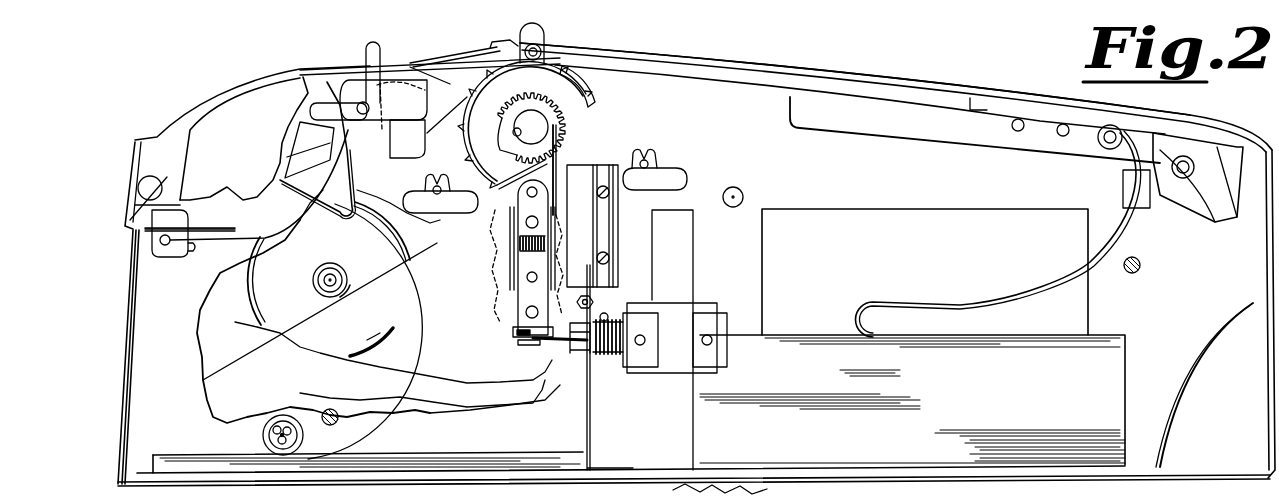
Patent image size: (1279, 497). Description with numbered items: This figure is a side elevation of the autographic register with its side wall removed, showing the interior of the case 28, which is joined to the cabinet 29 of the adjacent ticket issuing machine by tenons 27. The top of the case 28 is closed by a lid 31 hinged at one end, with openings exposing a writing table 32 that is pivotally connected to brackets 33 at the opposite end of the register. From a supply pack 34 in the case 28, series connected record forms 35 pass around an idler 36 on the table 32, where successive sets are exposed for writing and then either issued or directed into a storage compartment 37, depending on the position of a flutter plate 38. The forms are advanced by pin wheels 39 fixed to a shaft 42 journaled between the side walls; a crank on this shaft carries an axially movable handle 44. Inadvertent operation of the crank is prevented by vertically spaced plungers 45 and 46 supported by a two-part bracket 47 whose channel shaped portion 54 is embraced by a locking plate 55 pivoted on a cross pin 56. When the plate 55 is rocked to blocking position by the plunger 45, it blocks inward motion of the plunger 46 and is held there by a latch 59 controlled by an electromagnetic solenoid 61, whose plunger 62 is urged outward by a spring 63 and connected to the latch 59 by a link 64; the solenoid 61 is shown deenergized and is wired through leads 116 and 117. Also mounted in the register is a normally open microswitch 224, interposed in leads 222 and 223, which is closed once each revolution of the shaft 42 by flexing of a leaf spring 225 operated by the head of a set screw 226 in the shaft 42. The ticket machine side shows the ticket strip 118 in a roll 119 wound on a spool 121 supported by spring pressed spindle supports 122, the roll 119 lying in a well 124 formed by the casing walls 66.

The tenons 27 is at (742, 195).
The case 28 is at (125, 210).
The cabinet 29 is at (223, 343).
The lid 31 is at (747, 68).
The writing table 32 is at (818, 97).
The brackets 33 is at (1168, 207).
The supply pack 34 is at (1117, 370).
The record forms 35 is at (1118, 223).
The idler 36 is at (1108, 147).
The storage compartment 37 is at (163, 300).
The flutter plate 38 is at (462, 58).
The pin wheels 39 is at (590, 88).
The shaft 42 is at (525, 113).
The handle 44 is at (510, 267).
The plunger 45 is at (527, 222).
The plunger 46 is at (533, 304).
The two-part bracket 47 is at (517, 318).
The channel shaped portion 54 is at (527, 263).
The locking plate 55 is at (513, 230).
The cross pin 56 is at (520, 250).
The latch 59 is at (522, 340).
The electromagnetic solenoid 61 is at (663, 308).
The plunger 62 is at (565, 350).
The spring 63 is at (622, 352).
The link 64 is at (540, 357).
The casing walls 66 is at (263, 377).
The lead 116 is at (292, 423).
The lead 117 is at (280, 446).
The strip 118 is at (432, 243).
The roll 119 is at (387, 334).
The spool 121 is at (330, 264).
The spindle supports 122 is at (338, 267).
The well 124 is at (463, 367).
The lead 222 is at (303, 438).
The lead 223 is at (273, 432).
The switch 224 is at (587, 173).
The leaf spring 225 is at (563, 132).
The set screw 226 is at (515, 132).